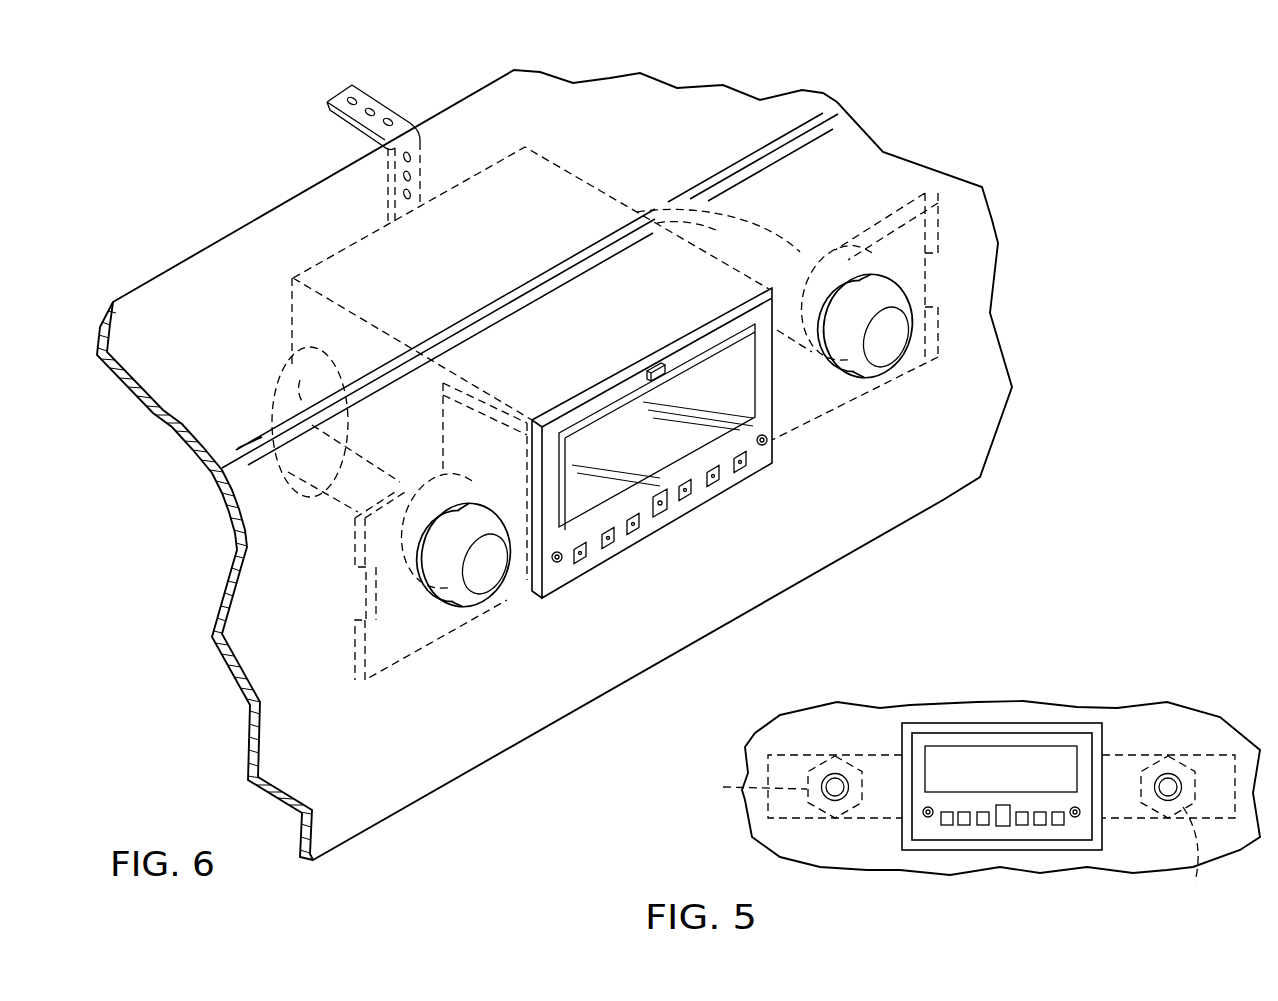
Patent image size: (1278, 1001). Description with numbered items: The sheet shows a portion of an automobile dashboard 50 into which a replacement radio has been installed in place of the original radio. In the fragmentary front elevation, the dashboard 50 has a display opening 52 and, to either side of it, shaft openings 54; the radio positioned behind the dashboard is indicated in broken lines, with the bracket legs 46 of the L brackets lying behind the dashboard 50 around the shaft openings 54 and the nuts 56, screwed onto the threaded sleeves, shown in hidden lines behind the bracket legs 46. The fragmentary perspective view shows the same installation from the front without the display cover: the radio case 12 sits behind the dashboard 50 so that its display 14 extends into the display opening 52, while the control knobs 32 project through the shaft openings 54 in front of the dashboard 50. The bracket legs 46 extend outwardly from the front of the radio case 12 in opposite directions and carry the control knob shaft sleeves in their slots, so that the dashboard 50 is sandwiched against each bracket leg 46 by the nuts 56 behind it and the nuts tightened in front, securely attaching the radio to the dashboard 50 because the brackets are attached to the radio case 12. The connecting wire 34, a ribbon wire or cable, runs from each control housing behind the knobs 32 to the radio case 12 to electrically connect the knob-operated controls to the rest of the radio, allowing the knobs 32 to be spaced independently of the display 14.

In FIG. 6, the radio case 12 is at (561, 181).
In FIG. 6, the display 14 is at (705, 340).
In FIG. 5, the display 14 is at (1052, 737).
In FIG. 6, the control knob 32 is at (888, 352).
In FIG. 6, the connecting wire 34 is at (763, 234).
In FIG. 5, the bracket leg 46 is at (798, 758).
In FIG. 6, the dashboard 50 is at (885, 517).
In FIG. 5, the dashboard 50 is at (815, 725).
In FIG. 6, the display opening 52 is at (636, 360).
In FIG. 5, the display opening 52 is at (1002, 725).
In FIG. 5, the shaft opening 54 is at (843, 778).
In FIG. 5, the nut 56 is at (947, 842).